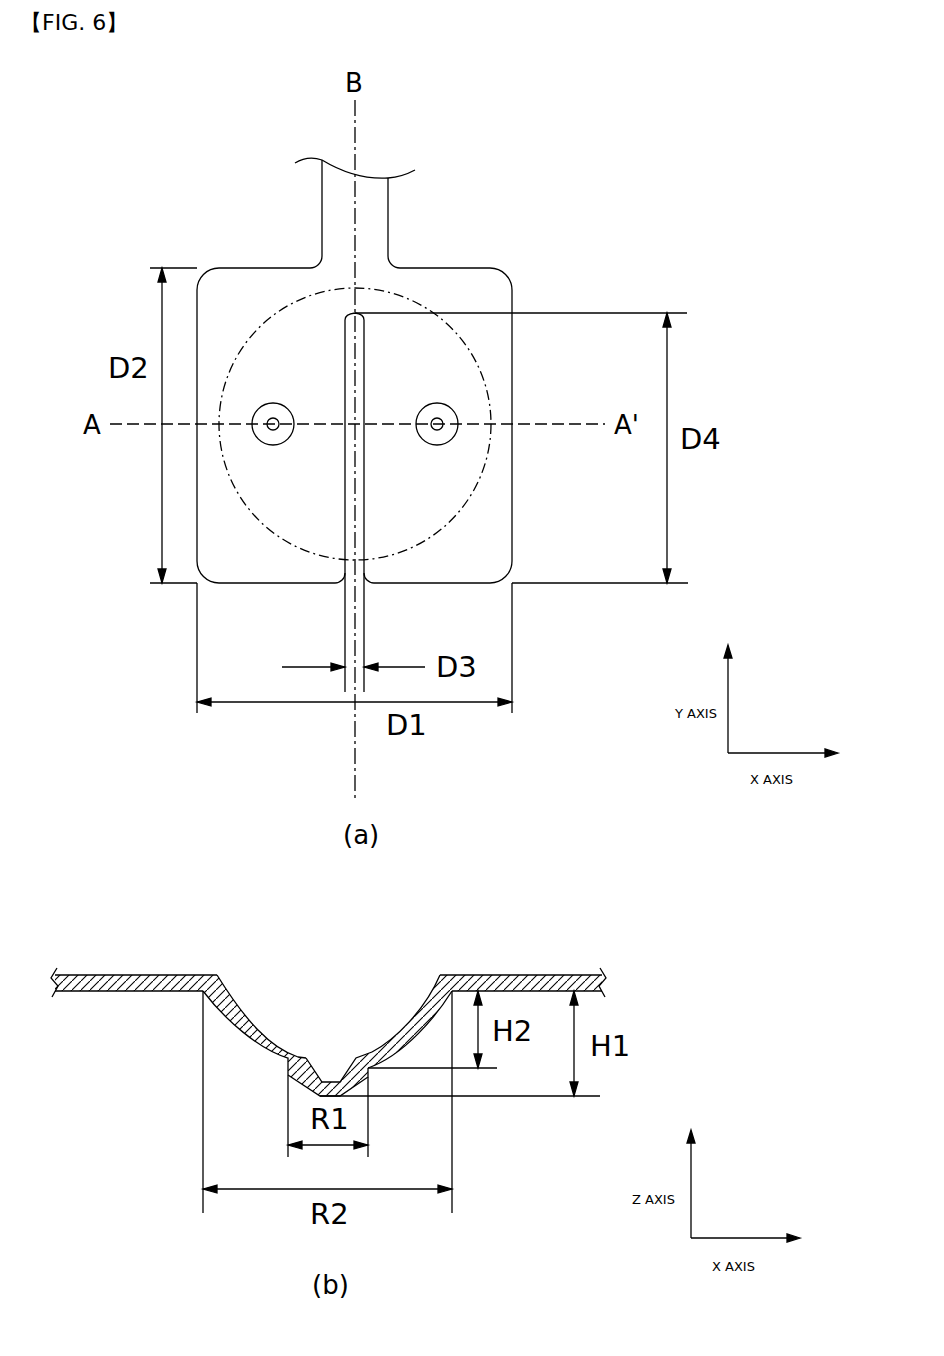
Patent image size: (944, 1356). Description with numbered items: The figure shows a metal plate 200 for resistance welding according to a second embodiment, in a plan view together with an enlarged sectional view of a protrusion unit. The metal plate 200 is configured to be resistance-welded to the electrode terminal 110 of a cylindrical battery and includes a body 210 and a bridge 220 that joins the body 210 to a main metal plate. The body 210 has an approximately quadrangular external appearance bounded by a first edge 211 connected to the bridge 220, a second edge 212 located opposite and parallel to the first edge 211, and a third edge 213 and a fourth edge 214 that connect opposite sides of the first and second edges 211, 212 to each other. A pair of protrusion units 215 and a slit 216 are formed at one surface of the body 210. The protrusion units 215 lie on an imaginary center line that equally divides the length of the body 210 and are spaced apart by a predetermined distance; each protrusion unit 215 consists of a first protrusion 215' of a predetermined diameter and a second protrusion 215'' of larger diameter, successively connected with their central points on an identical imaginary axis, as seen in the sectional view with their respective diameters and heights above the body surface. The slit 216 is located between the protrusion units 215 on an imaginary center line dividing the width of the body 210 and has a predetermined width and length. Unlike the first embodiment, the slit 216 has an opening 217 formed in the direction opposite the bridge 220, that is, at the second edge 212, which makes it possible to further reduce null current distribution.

The metal plate 200 is at (622, 178).
The bridge 220 is at (373, 210).
The body 210 is at (352, 449).
The first edge 211 is at (237, 268).
The second edge 212 is at (247, 583).
The third edge 213 is at (197, 325).
The fourth edge 214 is at (513, 358).
The electrode terminal 110 is at (305, 298).
The protrusion unit 215 is at (540, 749).
The first protrusion 215' is at (500, 757).
The second protrusion 215'' is at (457, 739).
The slit 216 is at (345, 478).
The opening 217 is at (365, 568).